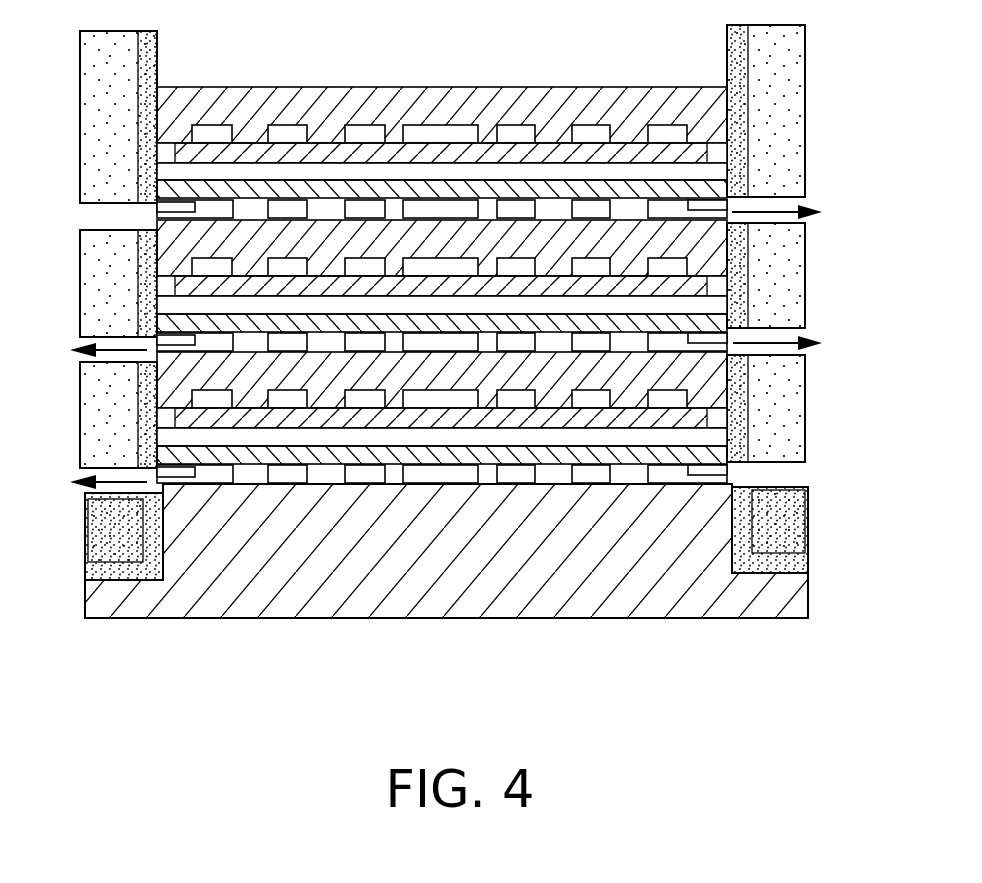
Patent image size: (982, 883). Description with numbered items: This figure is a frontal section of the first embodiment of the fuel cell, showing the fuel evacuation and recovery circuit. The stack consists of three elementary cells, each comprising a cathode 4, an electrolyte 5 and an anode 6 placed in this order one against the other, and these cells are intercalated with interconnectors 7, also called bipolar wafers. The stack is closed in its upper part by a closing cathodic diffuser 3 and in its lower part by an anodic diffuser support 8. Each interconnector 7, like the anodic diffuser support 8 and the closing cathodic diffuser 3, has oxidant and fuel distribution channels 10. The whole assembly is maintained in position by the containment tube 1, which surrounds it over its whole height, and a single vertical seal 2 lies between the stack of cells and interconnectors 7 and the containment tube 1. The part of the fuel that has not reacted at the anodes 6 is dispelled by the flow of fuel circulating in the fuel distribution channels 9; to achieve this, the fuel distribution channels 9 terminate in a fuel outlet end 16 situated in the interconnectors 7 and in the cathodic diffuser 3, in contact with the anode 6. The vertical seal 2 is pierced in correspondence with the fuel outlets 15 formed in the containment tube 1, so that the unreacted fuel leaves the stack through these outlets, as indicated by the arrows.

The containment tube 1 is at (770, 88).
The vertical seal 2 is at (740, 418).
The closing cathodic diffuser 3 is at (298, 108).
The cathode 4 is at (185, 155).
The electrolyte 5 is at (175, 175).
The anode 6 is at (190, 214).
The interconnector 7 is at (170, 398).
The anodic diffuser support 8 is at (247, 600).
The fuel distribution channels 9 is at (292, 477).
The oxidant and fuel distribution channels 10 is at (450, 126).
The fuel outlets 15 is at (97, 337).
The fuel outlet end 16 is at (725, 186).